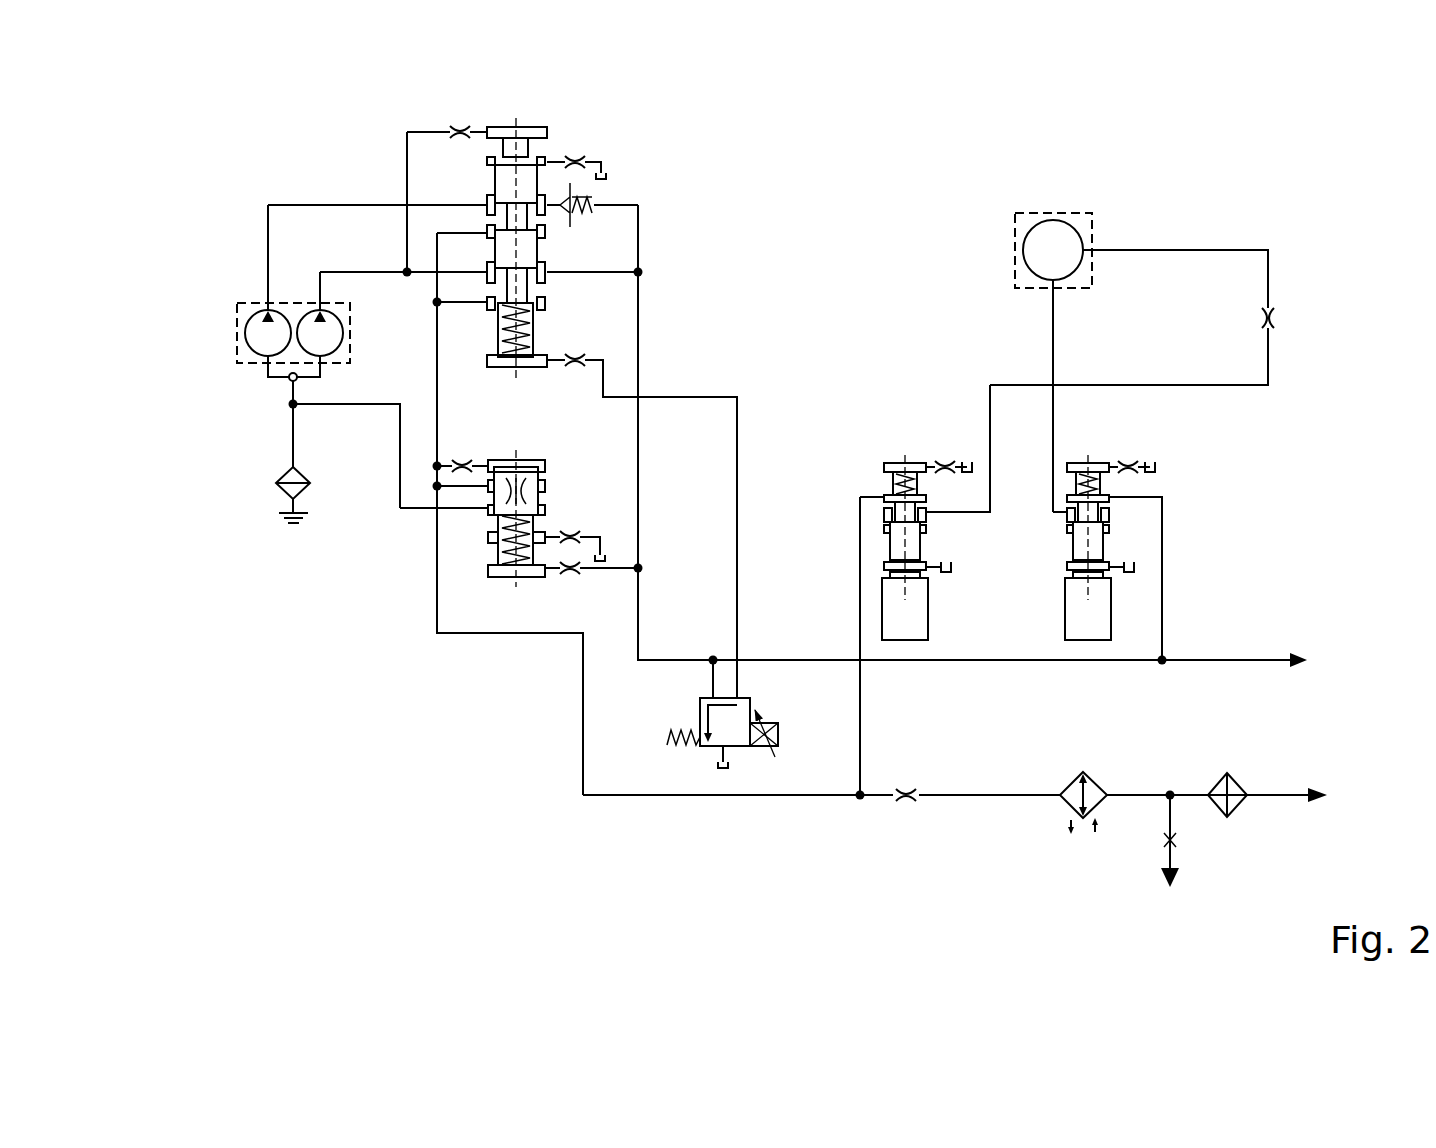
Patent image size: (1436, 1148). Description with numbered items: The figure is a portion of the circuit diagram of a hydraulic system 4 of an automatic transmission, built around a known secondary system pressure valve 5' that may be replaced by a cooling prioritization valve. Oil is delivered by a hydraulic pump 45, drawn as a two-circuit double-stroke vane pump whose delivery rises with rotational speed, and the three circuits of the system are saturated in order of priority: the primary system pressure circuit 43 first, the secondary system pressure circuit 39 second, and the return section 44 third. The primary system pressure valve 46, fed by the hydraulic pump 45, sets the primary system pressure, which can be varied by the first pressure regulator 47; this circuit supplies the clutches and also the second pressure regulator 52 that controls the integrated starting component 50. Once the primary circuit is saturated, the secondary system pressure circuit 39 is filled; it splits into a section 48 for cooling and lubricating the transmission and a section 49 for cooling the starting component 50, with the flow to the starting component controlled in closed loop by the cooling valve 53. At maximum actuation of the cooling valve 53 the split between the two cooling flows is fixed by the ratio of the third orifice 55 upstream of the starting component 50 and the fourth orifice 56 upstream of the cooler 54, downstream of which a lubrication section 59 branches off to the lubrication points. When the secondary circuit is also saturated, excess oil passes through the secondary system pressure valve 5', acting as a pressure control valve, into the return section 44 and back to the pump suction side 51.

The hydraulic system 4 is at (370, 770).
The secondary system pressure valve 5' is at (394, 529).
The secondary system pressure circuit 39 is at (437, 340).
The primary system pressure circuit 43 is at (640, 340).
The return section 44 is at (293, 442).
The hydraulic pump 45 is at (236, 319).
The primary system pressure valve 46 is at (525, 124).
The first pressure regulator 47 is at (722, 775).
The section for cooling and lubricating the transmission 48 is at (987, 796).
The section for cooling a starting component 49 is at (860, 727).
The starting component 50 is at (1060, 208).
The pump suction side 51 is at (288, 380).
The second pressure regulator 52 is at (1105, 451).
The cooling valve 53 is at (900, 452).
The cooler 54 is at (1085, 832).
The third orifice 55 is at (1285, 319).
The fourth orifice 56 is at (908, 808).
The lubrication section 59 is at (1178, 812).